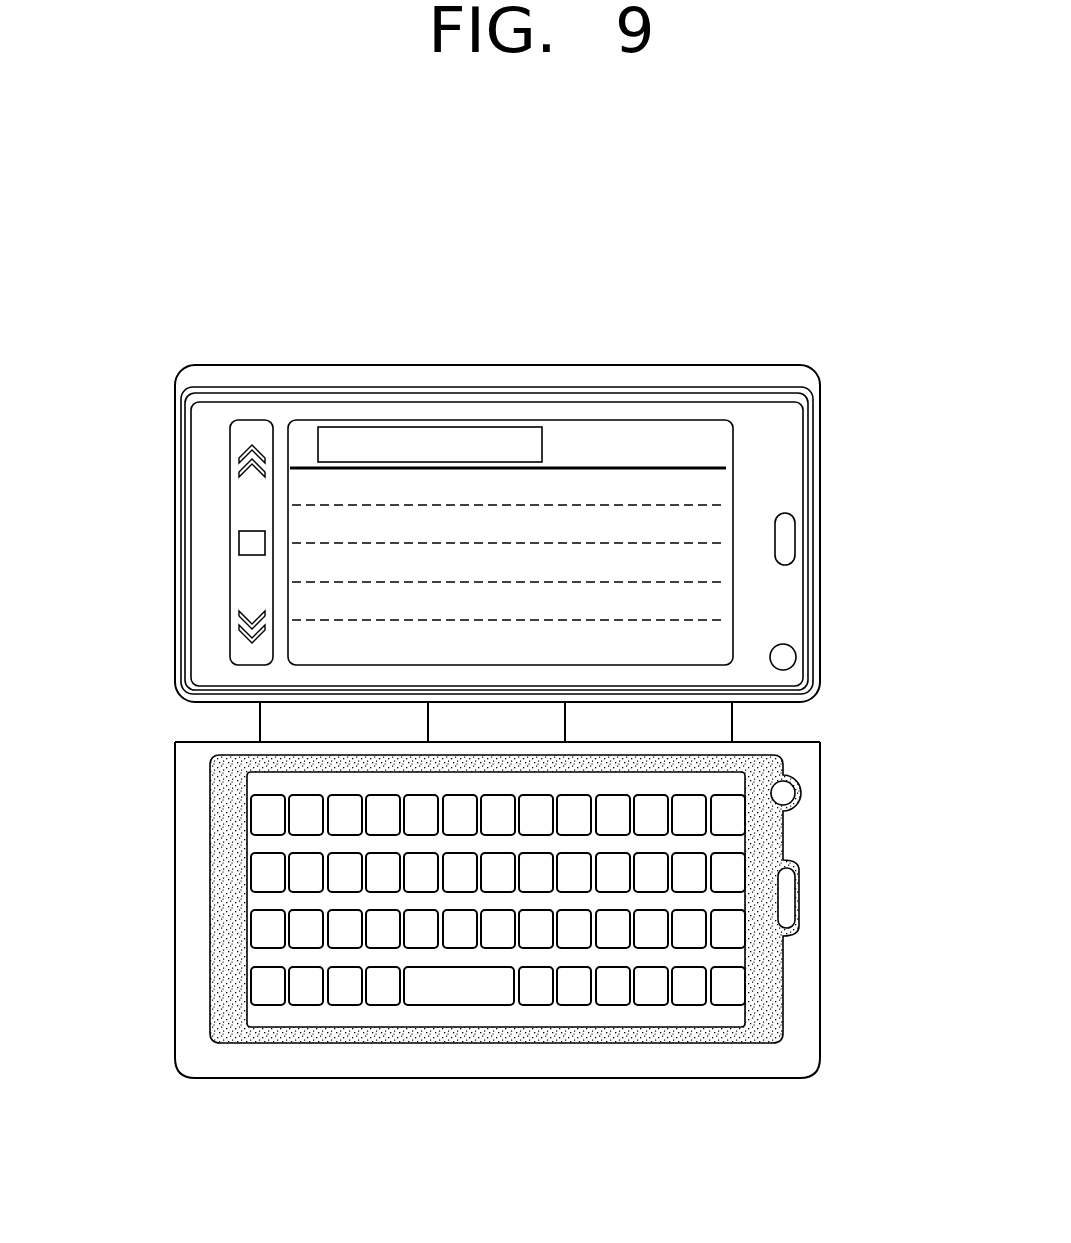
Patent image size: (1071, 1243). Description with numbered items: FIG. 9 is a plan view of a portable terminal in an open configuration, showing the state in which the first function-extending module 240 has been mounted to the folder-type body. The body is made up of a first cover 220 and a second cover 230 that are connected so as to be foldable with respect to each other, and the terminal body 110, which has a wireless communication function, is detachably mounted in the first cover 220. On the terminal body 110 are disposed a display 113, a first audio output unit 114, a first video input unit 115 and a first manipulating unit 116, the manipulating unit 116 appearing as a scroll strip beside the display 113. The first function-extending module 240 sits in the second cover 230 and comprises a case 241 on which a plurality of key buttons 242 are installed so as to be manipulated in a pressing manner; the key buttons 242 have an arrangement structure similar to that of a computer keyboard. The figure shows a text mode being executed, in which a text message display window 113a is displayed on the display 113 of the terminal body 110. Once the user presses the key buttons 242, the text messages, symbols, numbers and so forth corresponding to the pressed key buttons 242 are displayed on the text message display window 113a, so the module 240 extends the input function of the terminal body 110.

The terminal body 110 is at (803, 482).
The display 113 is at (599, 426).
The text message display window 113a is at (320, 606).
The first audio output unit 114 is at (788, 542).
The first video input unit 115 is at (788, 657).
The first manipulating unit 116 is at (242, 494).
The first cover 220 is at (683, 375).
The second cover 230 is at (810, 977).
The first function-extending module 240 is at (575, 957).
The case 241 is at (590, 1012).
The key buttons 242 is at (382, 993).